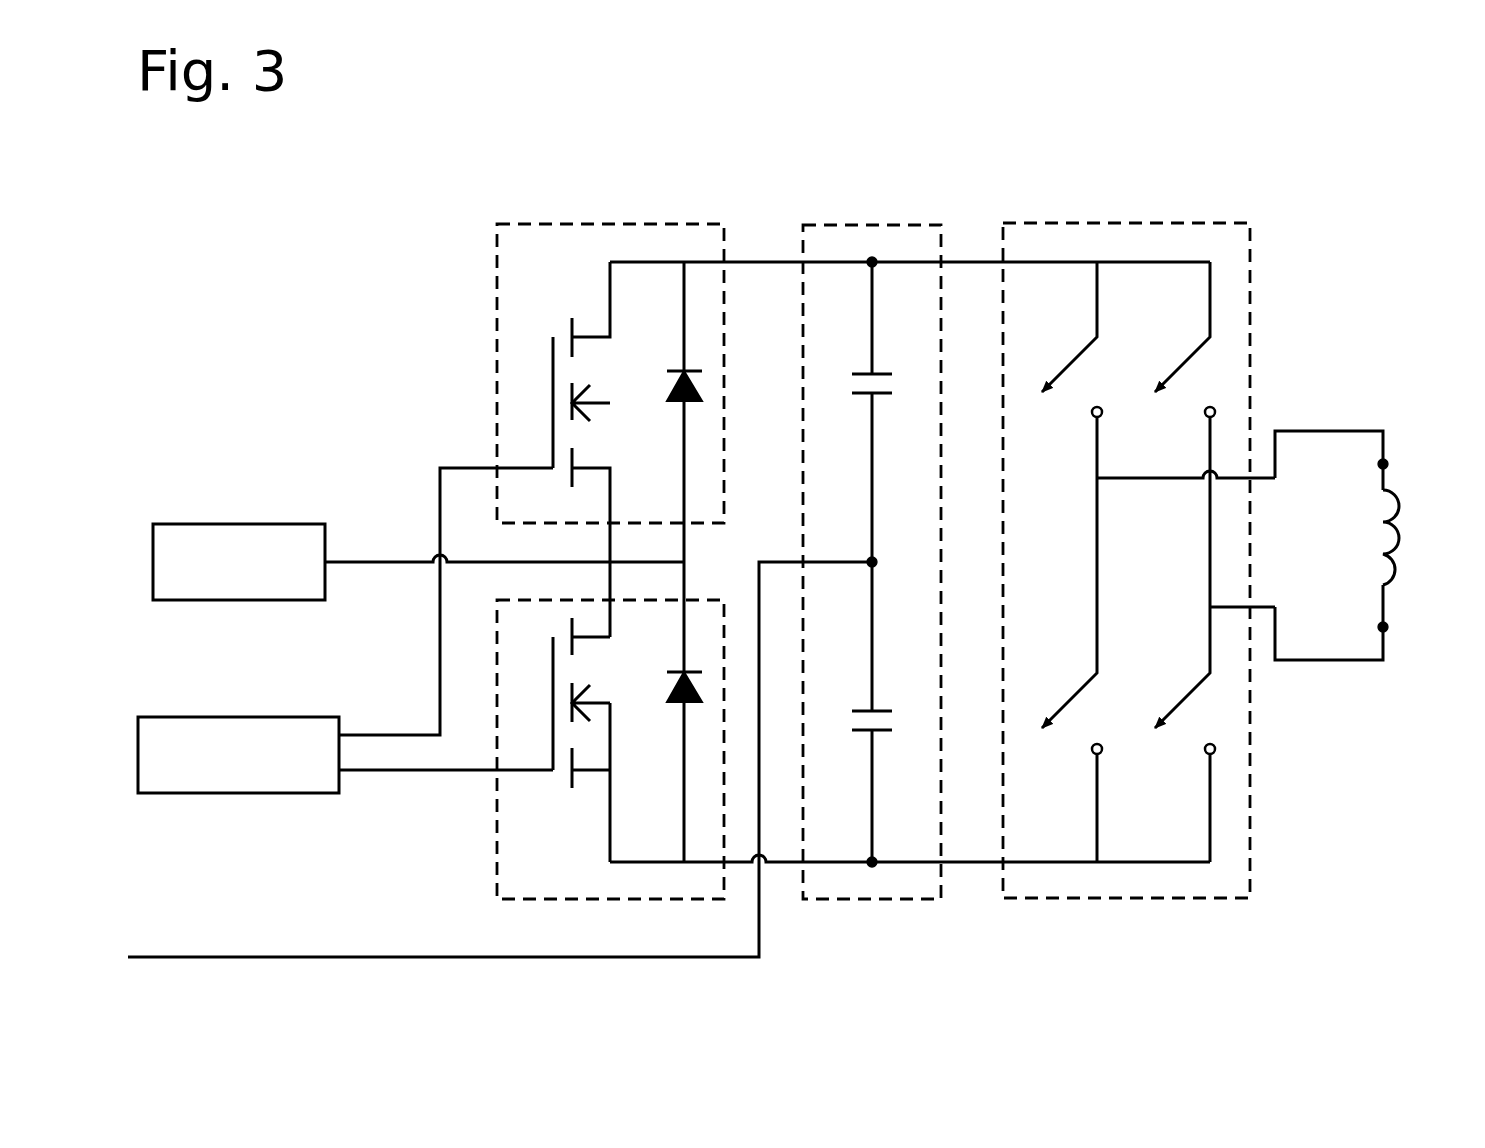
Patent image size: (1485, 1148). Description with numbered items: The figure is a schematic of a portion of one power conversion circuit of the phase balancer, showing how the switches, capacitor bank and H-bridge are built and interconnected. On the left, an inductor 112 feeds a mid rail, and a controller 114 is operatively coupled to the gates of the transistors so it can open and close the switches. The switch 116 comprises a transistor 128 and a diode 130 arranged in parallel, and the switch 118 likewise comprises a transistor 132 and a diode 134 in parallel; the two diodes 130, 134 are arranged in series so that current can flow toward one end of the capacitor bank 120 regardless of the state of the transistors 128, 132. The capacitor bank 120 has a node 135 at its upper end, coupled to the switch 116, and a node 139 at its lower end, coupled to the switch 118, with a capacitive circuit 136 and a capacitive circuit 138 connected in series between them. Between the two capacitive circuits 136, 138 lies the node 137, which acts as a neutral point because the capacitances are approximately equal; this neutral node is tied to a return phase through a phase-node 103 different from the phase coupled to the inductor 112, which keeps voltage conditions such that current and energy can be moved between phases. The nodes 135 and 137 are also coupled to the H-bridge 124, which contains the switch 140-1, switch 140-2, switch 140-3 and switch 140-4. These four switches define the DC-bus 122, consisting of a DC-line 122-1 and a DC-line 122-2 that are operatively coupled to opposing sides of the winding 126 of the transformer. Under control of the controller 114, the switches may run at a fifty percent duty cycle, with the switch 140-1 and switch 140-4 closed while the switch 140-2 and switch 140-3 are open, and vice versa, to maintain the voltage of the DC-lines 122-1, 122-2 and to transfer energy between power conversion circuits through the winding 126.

The phase-node 103 is at (499, 759).
The inductor 112 is at (418, 562).
The controller 114 is at (345, 630).
The switch 116 is at (497, 310).
The switch 118 is at (497, 823).
The capacitor bank 120 is at (882, 225).
The DC-bus 122 is at (1142, 562).
The DC-line 122-1 is at (1055, 562).
The DC-line 122-2 is at (1169, 562).
The H-bridge 124 is at (1115, 223).
The winding 126 is at (1428, 430).
The transistor 128 is at (555, 320).
The diode 130 is at (655, 373).
The transistor 132 is at (565, 802).
The diode 134 is at (657, 693).
The node 135 is at (860, 272).
The capacitive circuit 136 is at (907, 363).
The node 137 is at (893, 552).
The capacitive circuit 138 is at (900, 740).
The node 139 is at (857, 847).
The switch 140-1 is at (1060, 350).
The switch 140-2 is at (1062, 682).
The switch 140-3 is at (1173, 350).
The switch 140-4 is at (1175, 682).